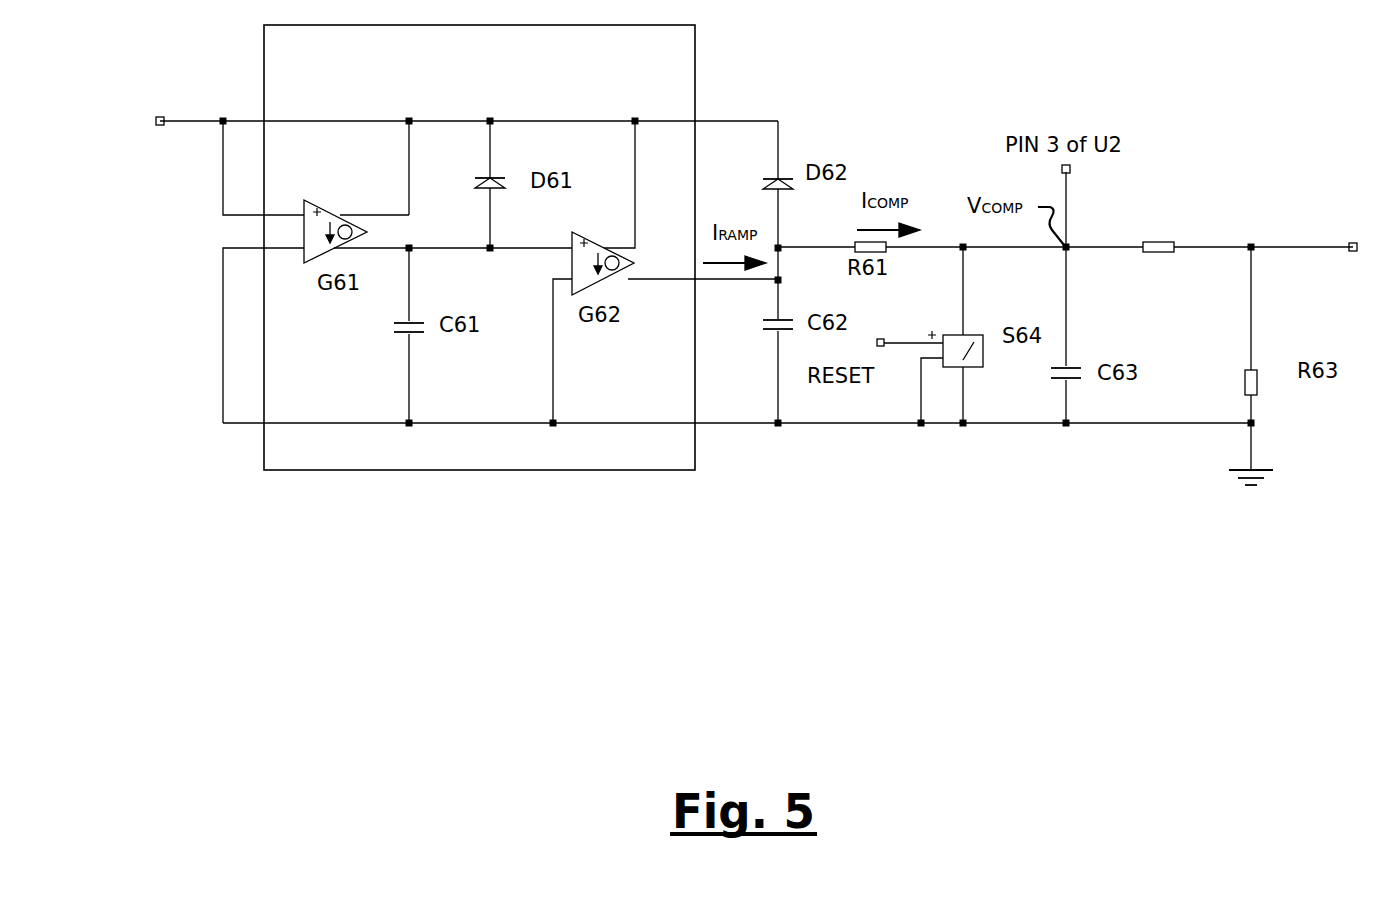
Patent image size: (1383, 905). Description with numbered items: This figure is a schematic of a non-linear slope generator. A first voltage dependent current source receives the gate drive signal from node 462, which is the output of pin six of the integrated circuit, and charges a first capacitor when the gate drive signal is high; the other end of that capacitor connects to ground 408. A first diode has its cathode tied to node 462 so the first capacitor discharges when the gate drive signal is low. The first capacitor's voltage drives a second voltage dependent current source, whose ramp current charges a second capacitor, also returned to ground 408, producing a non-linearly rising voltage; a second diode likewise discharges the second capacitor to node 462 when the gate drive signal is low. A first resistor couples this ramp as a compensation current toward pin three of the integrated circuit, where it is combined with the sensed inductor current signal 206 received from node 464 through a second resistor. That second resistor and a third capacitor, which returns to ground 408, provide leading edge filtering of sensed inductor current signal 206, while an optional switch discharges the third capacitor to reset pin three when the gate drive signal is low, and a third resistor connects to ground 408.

The node 462 is at (157, 116).
The node 464 is at (1352, 243).
The ground 408 is at (1251, 454).
The sensed inductor current signal 206 is at (1180, 227).